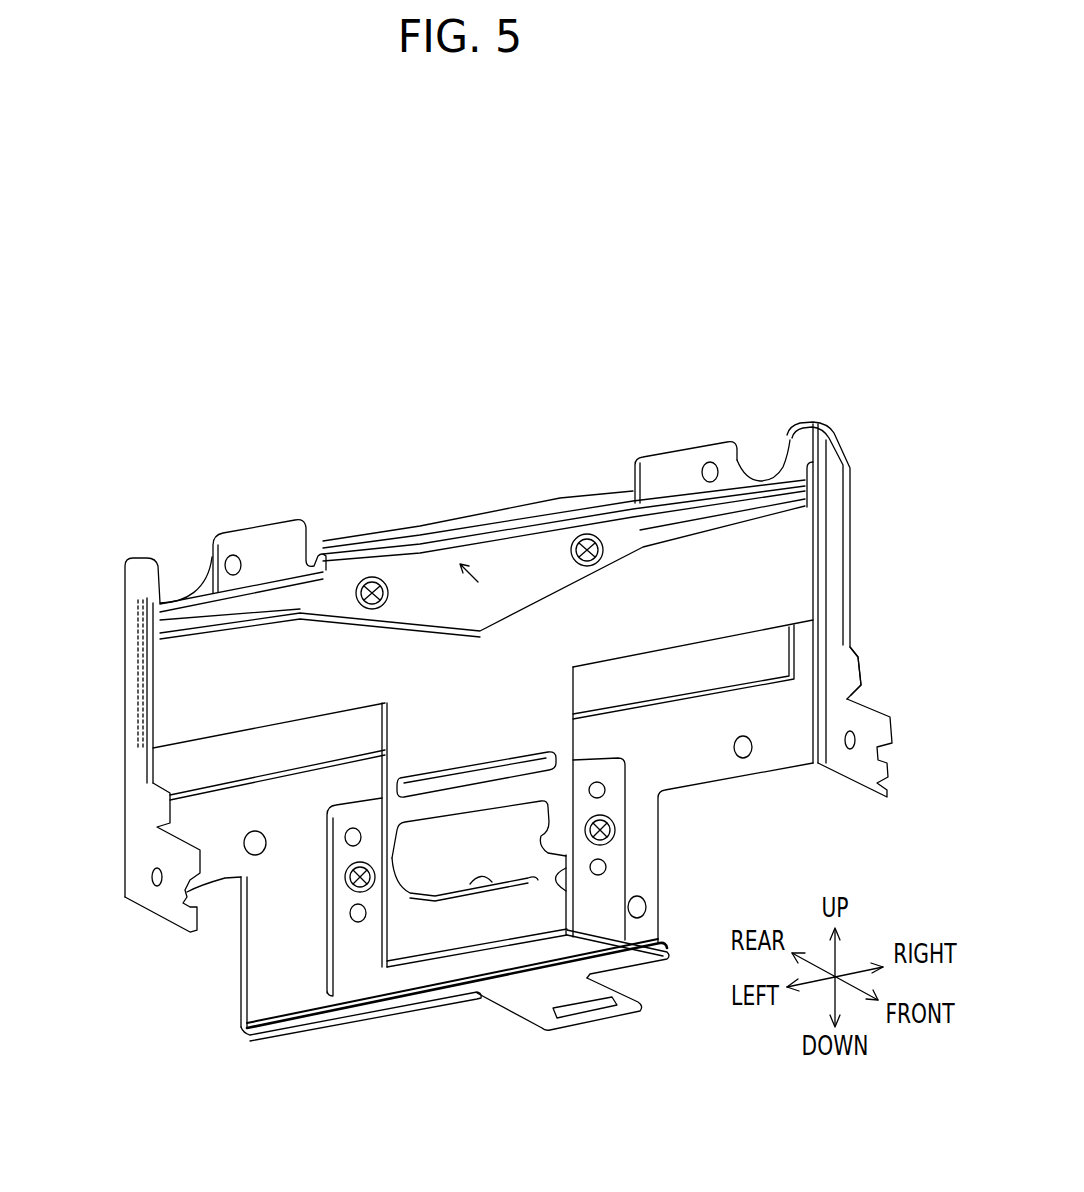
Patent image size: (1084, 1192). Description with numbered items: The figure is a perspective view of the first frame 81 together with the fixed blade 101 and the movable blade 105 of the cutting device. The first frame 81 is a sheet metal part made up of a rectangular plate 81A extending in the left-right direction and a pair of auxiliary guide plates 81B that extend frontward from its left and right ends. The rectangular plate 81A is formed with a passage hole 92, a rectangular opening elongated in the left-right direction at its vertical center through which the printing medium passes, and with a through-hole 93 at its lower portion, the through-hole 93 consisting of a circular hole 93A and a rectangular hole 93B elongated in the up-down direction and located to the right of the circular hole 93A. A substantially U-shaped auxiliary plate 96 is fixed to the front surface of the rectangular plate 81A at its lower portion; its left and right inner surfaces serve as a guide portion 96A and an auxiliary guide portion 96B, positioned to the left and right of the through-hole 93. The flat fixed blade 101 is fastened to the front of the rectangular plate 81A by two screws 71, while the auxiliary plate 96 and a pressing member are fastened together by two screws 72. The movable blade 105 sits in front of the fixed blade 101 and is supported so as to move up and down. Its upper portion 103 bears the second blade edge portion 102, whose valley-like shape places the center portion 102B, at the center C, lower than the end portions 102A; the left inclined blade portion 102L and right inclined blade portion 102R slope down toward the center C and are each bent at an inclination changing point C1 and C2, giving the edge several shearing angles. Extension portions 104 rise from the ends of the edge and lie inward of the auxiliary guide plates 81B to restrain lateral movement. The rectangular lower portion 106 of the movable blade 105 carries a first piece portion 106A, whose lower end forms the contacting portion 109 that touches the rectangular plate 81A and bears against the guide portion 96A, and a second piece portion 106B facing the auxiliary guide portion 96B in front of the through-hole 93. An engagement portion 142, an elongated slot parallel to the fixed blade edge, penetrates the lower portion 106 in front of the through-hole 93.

The screws 71 is at (479, 505).
The screws 72 is at (460, 888).
The first frame 81 is at (493, 614).
The rectangular plate 81A is at (832, 766).
The auxiliary guide plates 81B is at (486, 731).
The passage hole 92 is at (743, 654).
The through-hole 93 is at (573, 1005).
The circular hole 93A is at (577, 985).
The rectangular hole 93B is at (559, 986).
The auxiliary plate 96 is at (490, 924).
The guide portion 96A is at (369, 944).
The auxiliary guide portion 96B is at (656, 849).
The fixed blade 101 is at (482, 520).
The second blade edge portion 102 is at (482, 436).
The end portions 102A is at (475, 480).
The center portion 102B is at (437, 529).
The left inclined blade portion 102L is at (453, 447).
The right inclined blade portion 102R is at (611, 409).
The upper portion 103 is at (748, 573).
The extension portions 104 is at (483, 529).
The movable blade 105 is at (813, 680).
The lower portion 106 is at (483, 855).
The first piece portion 106A is at (479, 835).
The second piece portion 106B is at (520, 852).
The contacting portion 109 is at (465, 953).
The engagement portion 142 is at (476, 730).
The center C is at (498, 581).
The inclination changing point C1 is at (336, 557).
The inclination changing point C2 is at (616, 494).